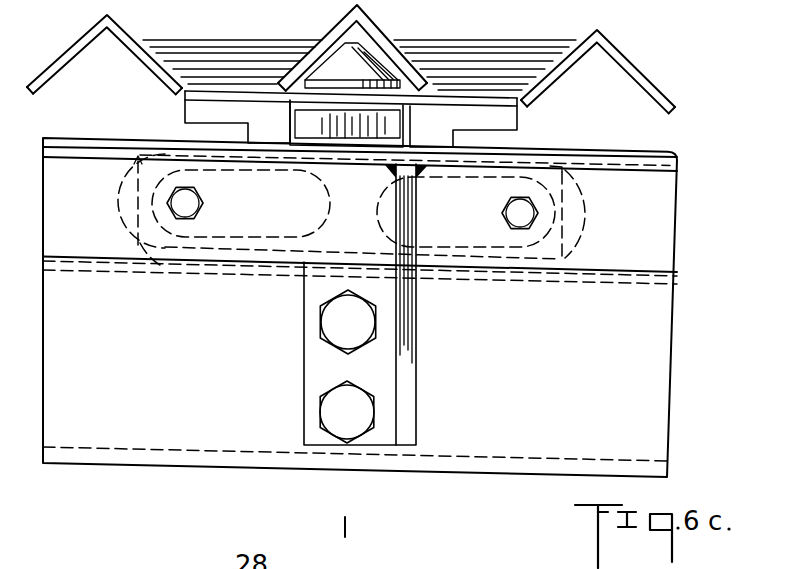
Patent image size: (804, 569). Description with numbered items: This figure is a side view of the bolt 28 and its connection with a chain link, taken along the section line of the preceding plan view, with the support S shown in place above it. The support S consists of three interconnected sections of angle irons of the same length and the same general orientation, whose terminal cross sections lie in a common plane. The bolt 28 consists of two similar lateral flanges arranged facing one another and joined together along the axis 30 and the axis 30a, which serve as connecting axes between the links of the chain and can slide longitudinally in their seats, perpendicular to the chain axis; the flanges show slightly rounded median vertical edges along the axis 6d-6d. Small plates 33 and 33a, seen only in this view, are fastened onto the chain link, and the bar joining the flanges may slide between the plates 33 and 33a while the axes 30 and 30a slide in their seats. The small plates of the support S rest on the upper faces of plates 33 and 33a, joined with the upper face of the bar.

The support S is at (226, 33).
The small plate 33 is at (185, 107).
The small plate 33a is at (519, 122).
The bolt 28 is at (269, 232).
The axis 30 is at (241, 203).
The axis 30a is at (504, 218).
The axis 6d- 6d is at (349, 527).